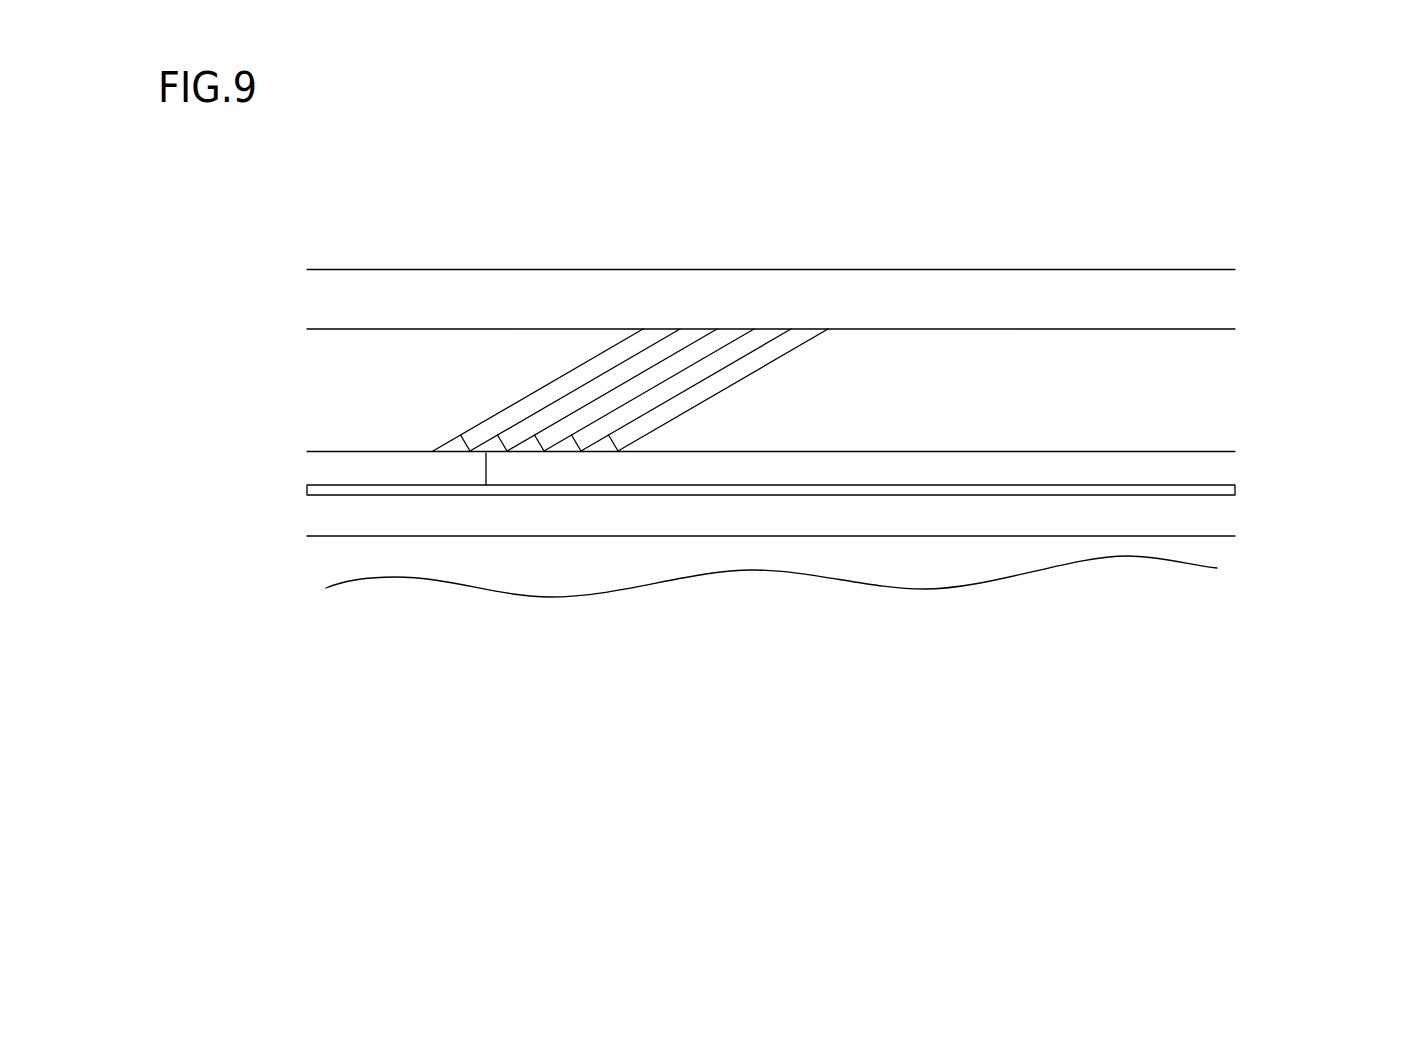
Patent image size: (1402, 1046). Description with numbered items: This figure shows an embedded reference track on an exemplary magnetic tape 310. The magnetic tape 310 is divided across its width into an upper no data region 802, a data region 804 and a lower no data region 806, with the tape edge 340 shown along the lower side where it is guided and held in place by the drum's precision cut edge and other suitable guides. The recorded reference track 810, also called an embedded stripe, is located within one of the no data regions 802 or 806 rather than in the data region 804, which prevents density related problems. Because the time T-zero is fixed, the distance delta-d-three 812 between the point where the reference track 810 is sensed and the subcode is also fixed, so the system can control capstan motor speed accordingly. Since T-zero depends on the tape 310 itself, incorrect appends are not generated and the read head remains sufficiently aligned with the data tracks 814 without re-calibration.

The magnetic tape 310 is at (980, 247).
The tape edge 340 is at (1087, 562).
The upper no data region 802 is at (1282, 267).
The data region 804 is at (1282, 330).
The lower no data region 806 is at (1282, 450).
The recorded reference track 810 is at (305, 500).
The distance Δd3 812 is at (530, 472).
The data tracks 814 is at (726, 328).